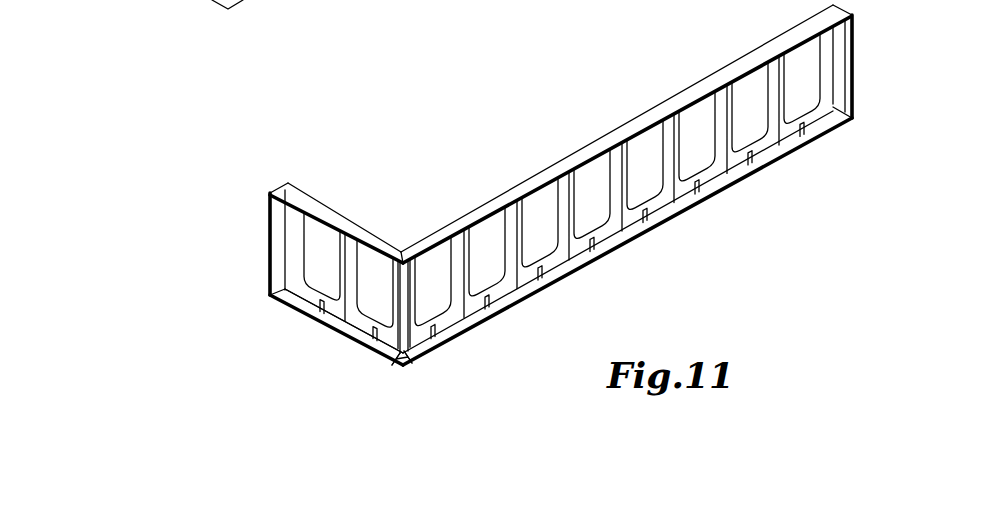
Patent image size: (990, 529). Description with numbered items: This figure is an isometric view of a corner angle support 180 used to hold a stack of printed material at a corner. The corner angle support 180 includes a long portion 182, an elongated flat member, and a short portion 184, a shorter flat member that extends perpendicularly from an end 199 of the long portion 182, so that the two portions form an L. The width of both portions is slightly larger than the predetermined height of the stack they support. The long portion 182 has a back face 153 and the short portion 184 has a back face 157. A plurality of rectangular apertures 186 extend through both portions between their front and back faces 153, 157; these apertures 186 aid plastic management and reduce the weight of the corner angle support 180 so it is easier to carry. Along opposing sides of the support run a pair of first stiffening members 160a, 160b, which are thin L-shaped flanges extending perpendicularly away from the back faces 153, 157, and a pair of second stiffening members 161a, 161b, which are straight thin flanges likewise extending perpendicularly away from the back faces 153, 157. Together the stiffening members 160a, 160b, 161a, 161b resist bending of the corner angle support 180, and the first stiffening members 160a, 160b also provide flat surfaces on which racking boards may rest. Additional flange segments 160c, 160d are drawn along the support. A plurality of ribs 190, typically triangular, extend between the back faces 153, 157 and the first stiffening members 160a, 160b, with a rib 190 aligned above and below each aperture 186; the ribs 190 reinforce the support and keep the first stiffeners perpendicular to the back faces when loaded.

The corner angle support 180 is at (527, 133).
The first stiffening member 160a is at (621, 127).
The first stiffening member 160b is at (528, 333).
The short side wall 160c is at (326, 198).
The short bottom wall 160d is at (353, 353).
The second stiffening member 161a is at (856, 77).
The second stiffening member 161b is at (268, 228).
The back face 153 is at (738, 172).
The back face 157 is at (292, 276).
The long portion 182 is at (683, 205).
The short portion 184 is at (317, 326).
The aperture 186 is at (592, 224).
The rib 190 is at (313, 307).
The end 199 is at (372, 366).